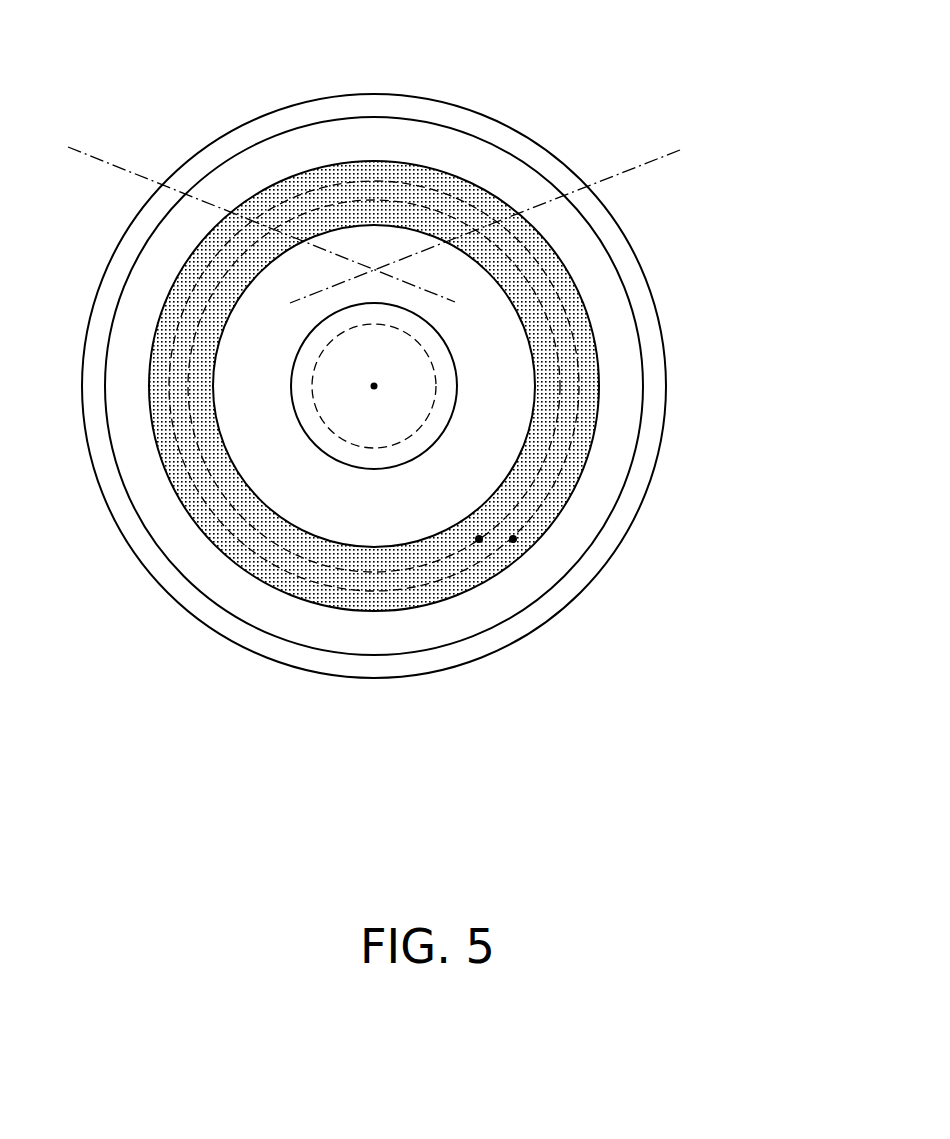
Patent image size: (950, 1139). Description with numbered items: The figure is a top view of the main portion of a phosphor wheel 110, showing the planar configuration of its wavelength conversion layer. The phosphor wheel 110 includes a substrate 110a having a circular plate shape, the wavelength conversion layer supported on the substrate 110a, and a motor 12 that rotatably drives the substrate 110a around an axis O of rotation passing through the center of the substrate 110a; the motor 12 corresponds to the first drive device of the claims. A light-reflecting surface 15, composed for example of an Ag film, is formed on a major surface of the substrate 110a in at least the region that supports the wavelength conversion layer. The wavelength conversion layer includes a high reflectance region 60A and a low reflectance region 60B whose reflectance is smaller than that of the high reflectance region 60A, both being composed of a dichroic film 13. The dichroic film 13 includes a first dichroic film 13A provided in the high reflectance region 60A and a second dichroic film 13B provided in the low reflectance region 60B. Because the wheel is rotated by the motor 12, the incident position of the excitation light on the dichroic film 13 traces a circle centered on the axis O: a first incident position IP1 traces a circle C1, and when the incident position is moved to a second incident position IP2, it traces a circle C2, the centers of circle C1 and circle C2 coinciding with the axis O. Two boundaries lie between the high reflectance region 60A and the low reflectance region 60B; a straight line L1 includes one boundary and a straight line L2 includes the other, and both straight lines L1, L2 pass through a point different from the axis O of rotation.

The phosphor wheel 110 is at (737, 98).
The substrate 110a is at (645, 458).
The light-reflecting surface 15 is at (528, 182).
The dichroic film 13 is at (570, 270).
The first dichroic film 13A is at (374, 203).
The high reflectance region 60A is at (293, 187).
The second dichroic film 13B is at (311, 503).
The low reflectance region 60B is at (175, 452).
The motor 12 is at (435, 368).
The axis of rotation O is at (374, 386).
The straight line L1 is at (667, 157).
The straight line L2 is at (92, 147).
The circle C1 is at (353, 573).
The circle C2 is at (297, 582).
The first incident position IP1 is at (485, 545).
The second incident position IP2 is at (515, 545).